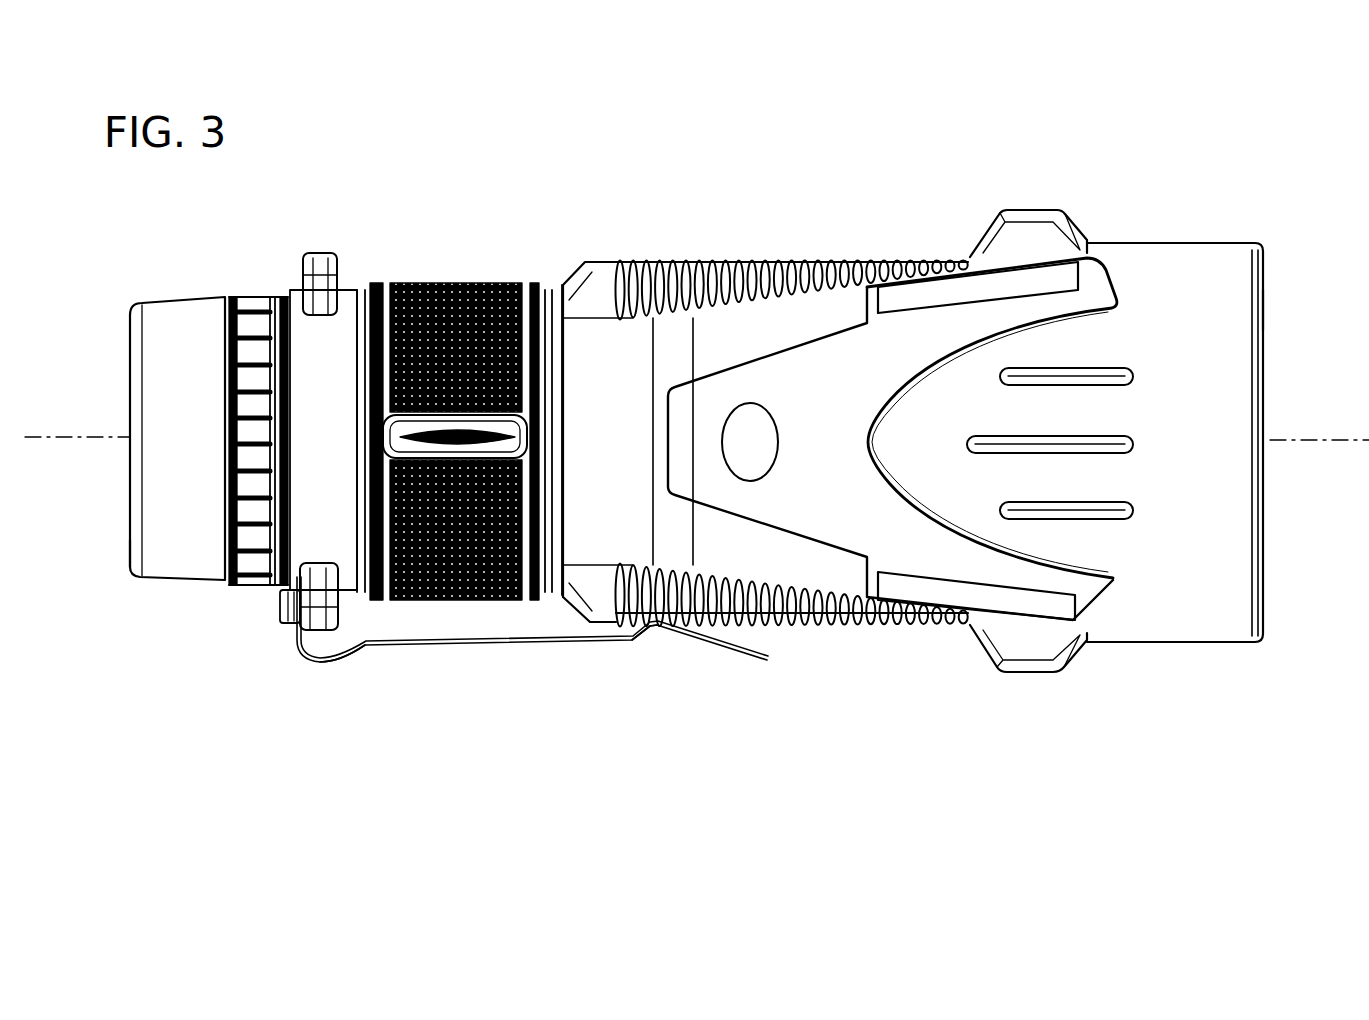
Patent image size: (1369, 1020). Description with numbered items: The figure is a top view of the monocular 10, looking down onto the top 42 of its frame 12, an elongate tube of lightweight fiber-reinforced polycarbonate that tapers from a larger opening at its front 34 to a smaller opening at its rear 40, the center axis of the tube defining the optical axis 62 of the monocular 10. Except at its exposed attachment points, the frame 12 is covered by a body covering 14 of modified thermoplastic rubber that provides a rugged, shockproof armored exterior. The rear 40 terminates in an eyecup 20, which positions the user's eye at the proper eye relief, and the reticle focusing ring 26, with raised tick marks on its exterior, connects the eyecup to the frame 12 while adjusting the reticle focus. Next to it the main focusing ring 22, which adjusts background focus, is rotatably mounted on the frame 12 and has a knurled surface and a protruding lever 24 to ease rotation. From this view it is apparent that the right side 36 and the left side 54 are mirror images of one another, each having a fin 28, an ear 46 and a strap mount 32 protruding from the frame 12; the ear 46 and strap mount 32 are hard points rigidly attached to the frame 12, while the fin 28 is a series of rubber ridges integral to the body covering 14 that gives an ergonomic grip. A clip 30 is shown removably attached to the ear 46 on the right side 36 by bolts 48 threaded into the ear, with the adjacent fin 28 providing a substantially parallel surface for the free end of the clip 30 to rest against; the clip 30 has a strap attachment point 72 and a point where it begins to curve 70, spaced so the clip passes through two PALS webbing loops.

The monocular 10 is at (692, 708).
The frame 12 is at (788, 318).
The body covering 14 is at (847, 290).
The eyecup 20 is at (160, 303).
The main focusing ring 22 is at (500, 283).
The protruding lever 24 is at (383, 427).
The reticle focusing ring 26 is at (253, 310).
The fin 28 is at (657, 262).
The clip 30 is at (458, 646).
The strap mount 32 is at (1015, 240).
The front 34 is at (1266, 307).
The right side 36 is at (1203, 644).
The rear 40 is at (125, 532).
The top 42 is at (1177, 440).
The ear 46 is at (318, 265).
The bolts 48 is at (282, 610).
The left side 54 is at (1185, 243).
The optical axis 62 is at (80, 430).
The curve 70 is at (352, 665).
The strap attachment point 72 is at (632, 650).